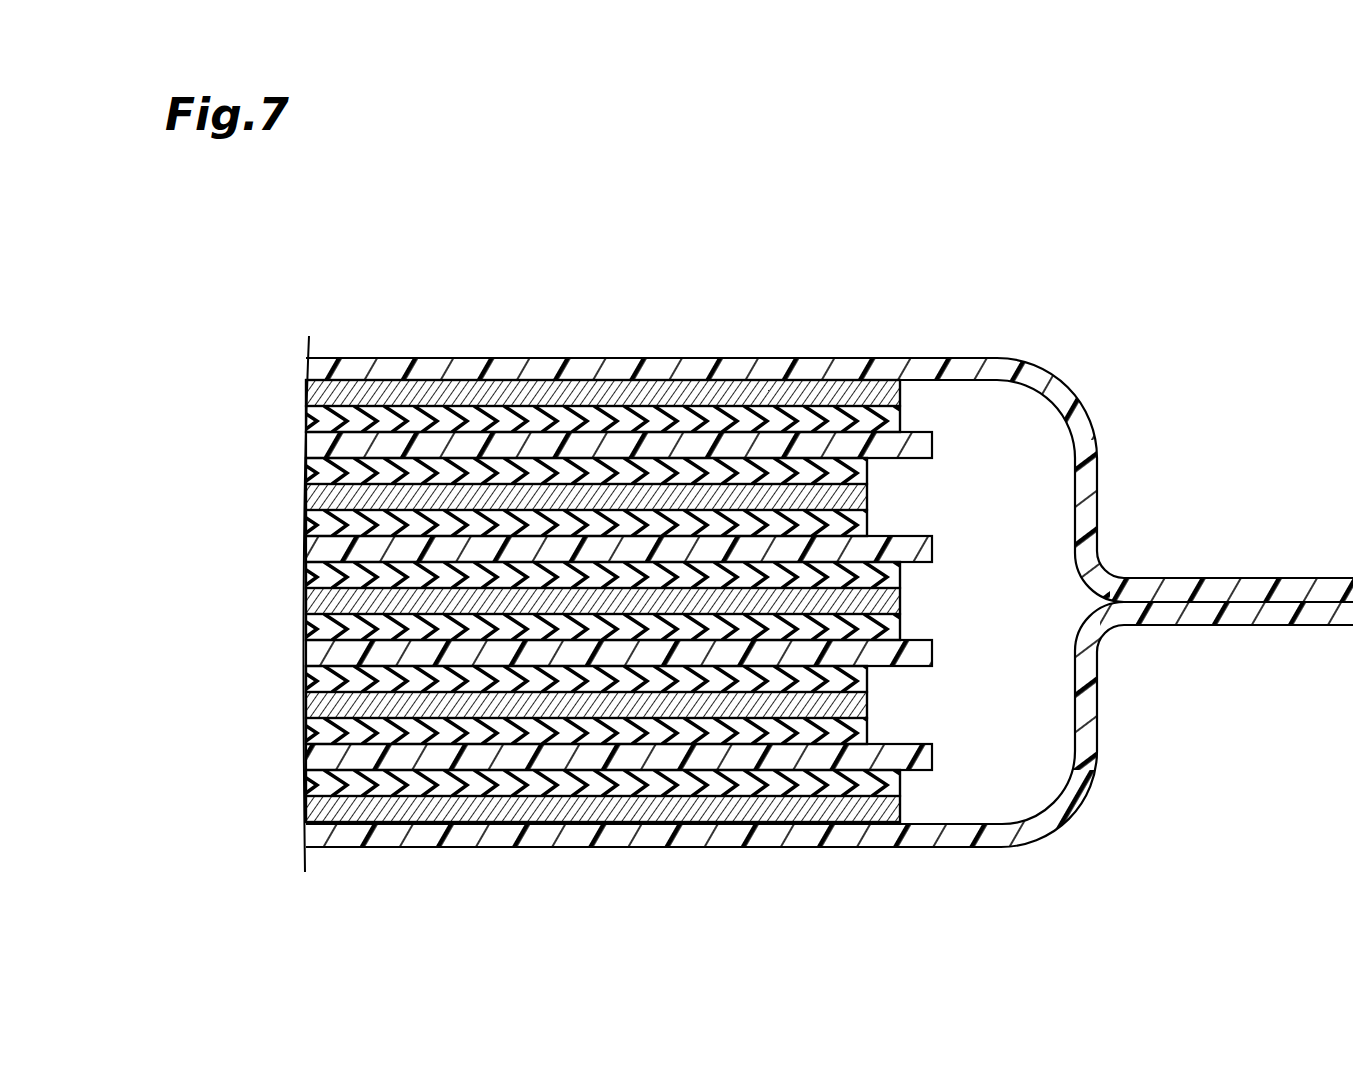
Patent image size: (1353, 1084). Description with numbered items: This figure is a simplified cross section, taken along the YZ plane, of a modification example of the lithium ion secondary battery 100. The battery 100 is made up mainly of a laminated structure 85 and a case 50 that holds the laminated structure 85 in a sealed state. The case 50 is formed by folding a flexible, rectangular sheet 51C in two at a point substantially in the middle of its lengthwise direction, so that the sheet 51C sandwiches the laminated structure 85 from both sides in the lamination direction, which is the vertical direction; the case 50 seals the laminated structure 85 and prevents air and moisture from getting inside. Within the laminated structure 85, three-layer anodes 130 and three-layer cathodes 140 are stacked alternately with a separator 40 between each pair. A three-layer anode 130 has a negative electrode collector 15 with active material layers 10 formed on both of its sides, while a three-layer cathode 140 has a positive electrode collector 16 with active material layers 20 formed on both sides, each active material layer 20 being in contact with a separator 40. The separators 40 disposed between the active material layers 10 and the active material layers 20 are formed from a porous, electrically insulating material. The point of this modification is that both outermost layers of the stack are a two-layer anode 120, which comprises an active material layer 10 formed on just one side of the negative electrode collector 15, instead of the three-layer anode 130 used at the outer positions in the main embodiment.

The lithium ion secondary battery 100 is at (871, 229).
The case 50 is at (829, 604).
The sheet 51C is at (458, 374).
The laminated structure 85 is at (533, 598).
The two-layer anode 120 is at (203, 378).
The three-layer anode 130 is at (203, 560).
The three-layer cathode 140 is at (203, 457).
The active material layer 10 is at (303, 419).
The negative electrode collector 15 is at (303, 393).
The positive electrode collector 16 is at (303, 497).
The active material layer 20 is at (303, 471).
The separator 40 is at (303, 445).